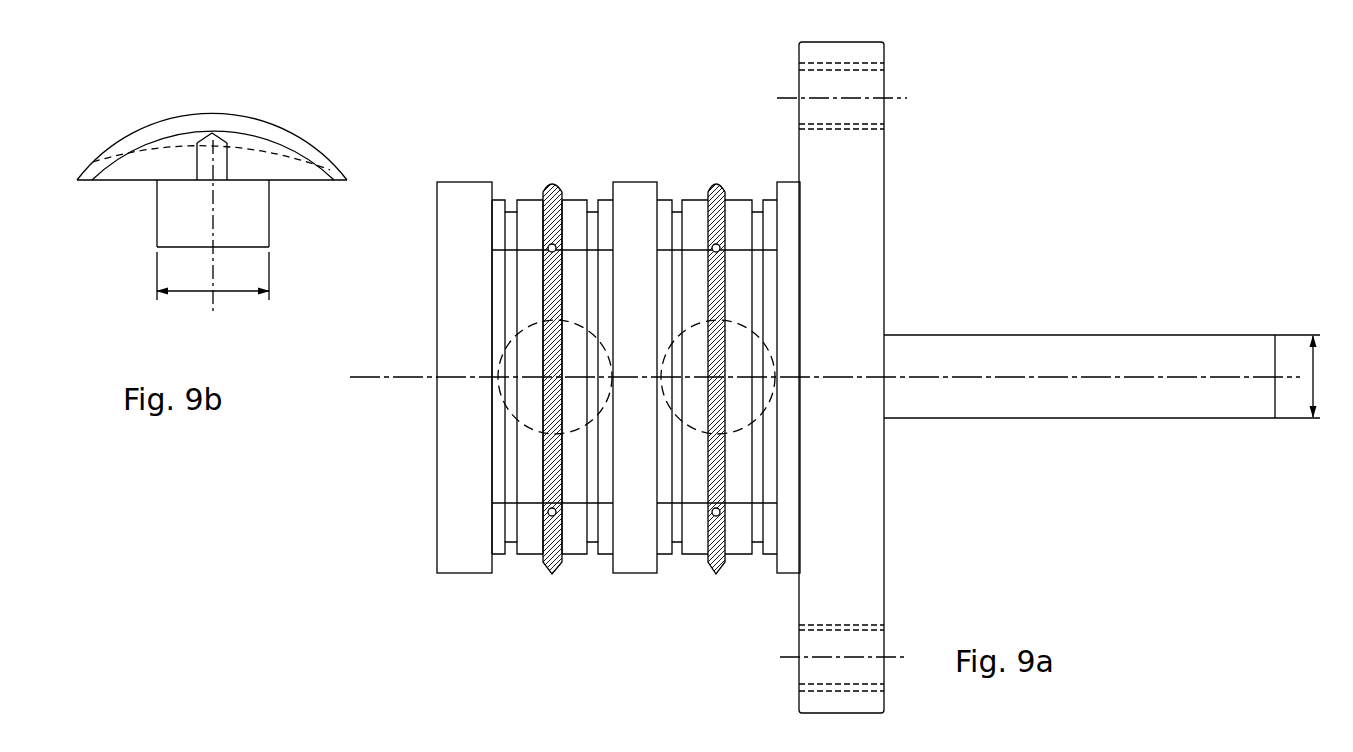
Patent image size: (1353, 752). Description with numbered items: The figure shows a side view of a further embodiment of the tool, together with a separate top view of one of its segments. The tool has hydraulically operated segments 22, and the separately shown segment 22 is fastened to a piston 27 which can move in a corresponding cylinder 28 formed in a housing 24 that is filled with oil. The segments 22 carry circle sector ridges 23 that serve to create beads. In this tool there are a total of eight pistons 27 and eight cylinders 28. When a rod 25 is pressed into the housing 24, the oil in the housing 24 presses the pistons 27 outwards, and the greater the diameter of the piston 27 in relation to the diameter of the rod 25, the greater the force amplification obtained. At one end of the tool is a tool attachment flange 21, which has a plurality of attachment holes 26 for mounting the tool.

In FIG. 9A, the tool attachment flange 21 is at (877, 377).
In FIG. 9B, the segment 22 is at (252, 167).
In FIG. 9A, the segment 22 is at (527, 203).
In FIG. 9A, the circle sector ridge 23 is at (550, 187).
In FIG. 9A, the housing 24 is at (618, 331).
In FIG. 9A, the rod 25 is at (943, 347).
In FIG. 9A, the attachment hole 26 is at (884, 590).
In FIG. 9B, the piston 27 is at (270, 227).
In FIG. 9A, the cylinder 28 is at (532, 428).